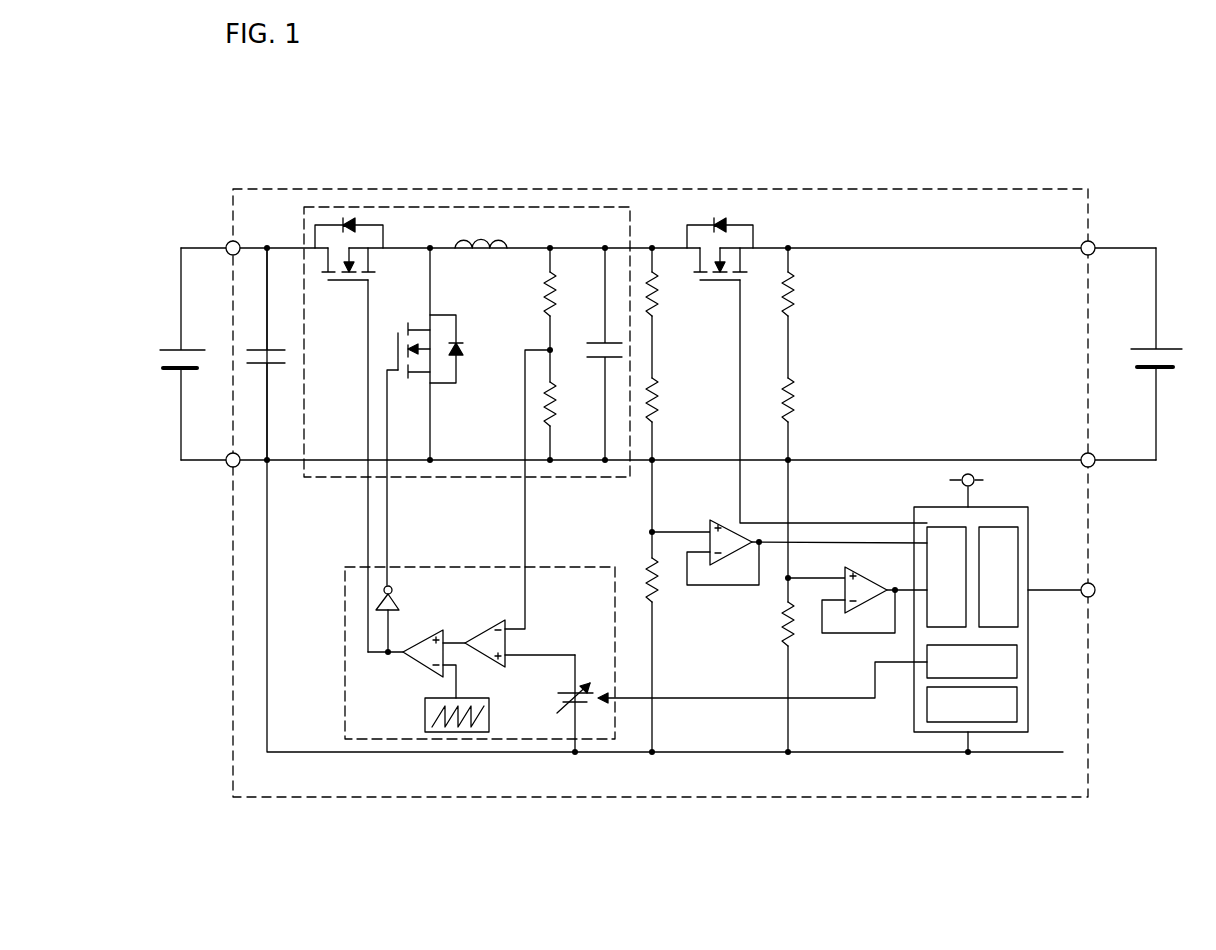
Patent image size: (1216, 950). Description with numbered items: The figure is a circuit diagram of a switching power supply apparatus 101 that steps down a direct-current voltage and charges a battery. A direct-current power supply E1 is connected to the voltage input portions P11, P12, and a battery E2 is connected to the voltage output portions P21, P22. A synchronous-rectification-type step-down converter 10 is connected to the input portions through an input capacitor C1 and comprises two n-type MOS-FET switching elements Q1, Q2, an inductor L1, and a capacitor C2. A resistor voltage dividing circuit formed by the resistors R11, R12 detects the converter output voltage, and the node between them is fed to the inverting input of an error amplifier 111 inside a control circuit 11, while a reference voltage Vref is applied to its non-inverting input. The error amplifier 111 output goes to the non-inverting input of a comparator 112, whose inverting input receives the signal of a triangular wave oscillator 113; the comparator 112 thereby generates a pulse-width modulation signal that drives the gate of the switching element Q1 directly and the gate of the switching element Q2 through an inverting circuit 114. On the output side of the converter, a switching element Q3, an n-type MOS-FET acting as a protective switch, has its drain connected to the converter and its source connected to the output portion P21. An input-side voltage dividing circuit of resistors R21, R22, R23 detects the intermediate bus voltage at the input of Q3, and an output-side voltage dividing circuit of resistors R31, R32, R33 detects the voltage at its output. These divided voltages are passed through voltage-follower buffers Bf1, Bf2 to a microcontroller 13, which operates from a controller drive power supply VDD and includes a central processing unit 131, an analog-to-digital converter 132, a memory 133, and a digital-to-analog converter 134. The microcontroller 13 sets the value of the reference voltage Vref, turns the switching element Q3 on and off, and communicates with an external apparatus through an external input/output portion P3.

The switching power supply apparatus 101 is at (232, 183).
The step-down converter 10 is at (305, 203).
The control circuit 11 is at (345, 580).
The microcontroller 13 is at (971, 616).
The central processing unit 131 is at (1017, 702).
The analog-to-digital converter 132 is at (914, 525).
The memory 133 is at (1018, 555).
The digital-to-analog converter 134 is at (1017, 655).
The error amplifier 111 is at (500, 625).
The comparator 112 is at (410, 667).
The triangular wave oscillator 113 is at (468, 698).
The inverting circuit 114 is at (401, 620).
The voltage input portion P11 is at (217, 241).
The voltage input portion P12 is at (217, 468).
The voltage output portion P21 is at (1104, 240).
The voltage output portion P22 is at (1104, 468).
The external input/output portion P3 is at (1072, 601).
The direct-current power supply E1 is at (172, 354).
The battery E2 is at (1164, 354).
The input capacitor C1 is at (271, 354).
The capacitor C2 is at (592, 354).
The inductor L1 is at (481, 258).
The switching element Q1 is at (354, 435).
The switching element Q2 is at (425, 415).
The switching element Q3 is at (807, 368).
The resistor R11 is at (567, 297).
The resistor R12 is at (567, 405).
The resistor R21 is at (674, 311).
The resistor R22 is at (674, 463).
The resistor R23 is at (670, 656).
The resistor R31 is at (808, 311).
The resistor R32 is at (806, 486).
The resistor R33 is at (768, 678).
The buffer Bf1 is at (789, 540).
The buffer Bf2 is at (857, 593).
The controller drive power supply VDD is at (945, 489).
The reference voltage Vref is at (562, 705).